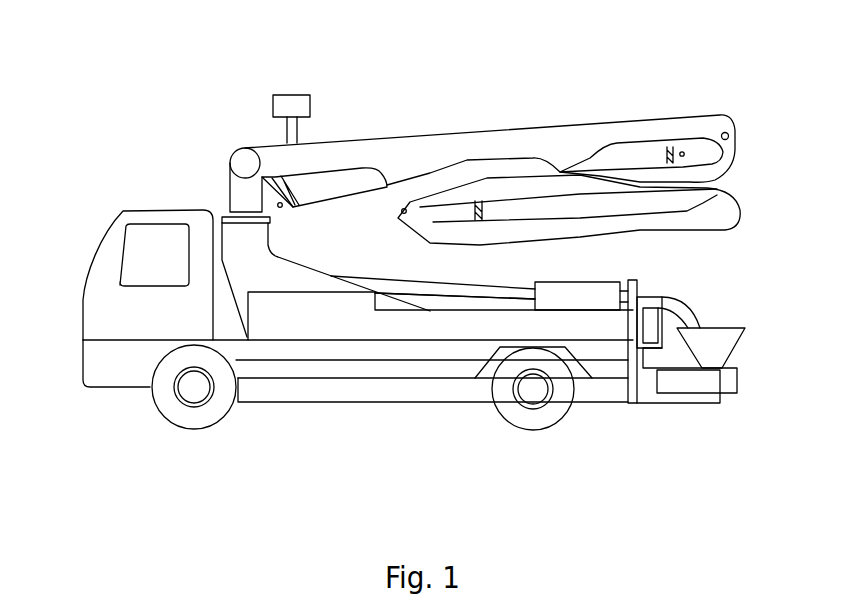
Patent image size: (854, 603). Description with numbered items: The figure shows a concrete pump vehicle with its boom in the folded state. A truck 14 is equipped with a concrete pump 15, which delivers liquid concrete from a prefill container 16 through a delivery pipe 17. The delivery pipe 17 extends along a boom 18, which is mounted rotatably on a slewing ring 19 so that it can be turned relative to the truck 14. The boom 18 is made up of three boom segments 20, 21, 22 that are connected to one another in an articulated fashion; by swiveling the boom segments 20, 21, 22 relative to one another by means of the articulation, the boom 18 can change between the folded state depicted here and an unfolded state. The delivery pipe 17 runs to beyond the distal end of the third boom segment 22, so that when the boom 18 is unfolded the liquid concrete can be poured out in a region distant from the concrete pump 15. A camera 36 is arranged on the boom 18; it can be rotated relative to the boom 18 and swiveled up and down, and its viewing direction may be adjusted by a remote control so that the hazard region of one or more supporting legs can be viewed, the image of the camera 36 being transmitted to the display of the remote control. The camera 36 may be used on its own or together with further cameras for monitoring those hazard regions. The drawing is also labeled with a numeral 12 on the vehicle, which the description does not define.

The truck chassis 12 is at (343, 392).
The truck 14 is at (107, 248).
The concrete pump 15 is at (720, 318).
The prefill container 16 is at (740, 313).
The delivery pipe 17 is at (372, 292).
The boom 18 is at (518, 162).
The slewing ring 19 is at (223, 216).
The first boom segment 20 is at (552, 137).
The second boom segment 21 is at (720, 162).
The third boom segment 22 is at (730, 208).
The camera 36 is at (292, 104).